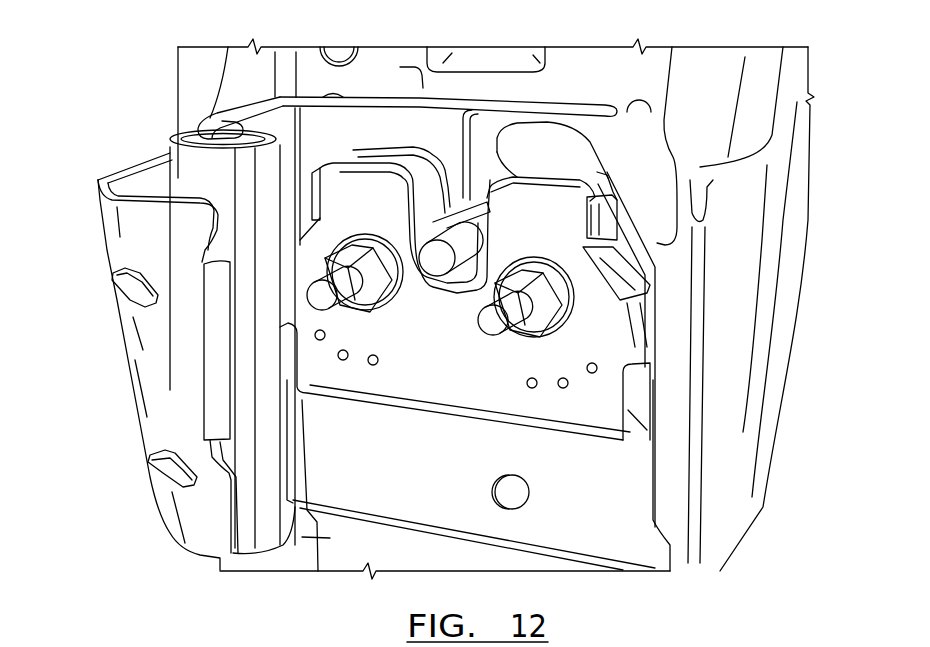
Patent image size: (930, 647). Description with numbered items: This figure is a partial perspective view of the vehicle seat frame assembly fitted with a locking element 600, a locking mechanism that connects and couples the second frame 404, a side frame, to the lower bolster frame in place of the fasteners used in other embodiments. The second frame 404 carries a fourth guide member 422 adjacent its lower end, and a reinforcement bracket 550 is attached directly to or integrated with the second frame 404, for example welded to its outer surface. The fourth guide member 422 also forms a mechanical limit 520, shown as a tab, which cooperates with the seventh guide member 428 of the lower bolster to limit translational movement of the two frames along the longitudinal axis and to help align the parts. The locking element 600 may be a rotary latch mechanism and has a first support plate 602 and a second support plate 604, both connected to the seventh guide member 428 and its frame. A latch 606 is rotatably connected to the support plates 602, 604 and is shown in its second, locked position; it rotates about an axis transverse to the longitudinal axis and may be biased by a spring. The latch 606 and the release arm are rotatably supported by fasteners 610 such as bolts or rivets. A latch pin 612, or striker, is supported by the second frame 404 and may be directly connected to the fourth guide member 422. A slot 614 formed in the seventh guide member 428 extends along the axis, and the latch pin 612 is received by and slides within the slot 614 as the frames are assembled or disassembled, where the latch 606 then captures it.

The second frame 404 is at (765, 230).
The fourth guide member 422 is at (267, 392).
The seventh guide member 428 is at (583, 481).
The mechanical limit 520 is at (570, 103).
The reinforcement bracket 550 is at (104, 233).
The locking element 600 is at (353, 374).
The first support plate 602 is at (600, 388).
The second support plate 604 is at (637, 213).
The latch 606 is at (563, 158).
The fasteners 610 is at (480, 322).
The latch pin 612 is at (448, 263).
The slot 614 is at (463, 143).